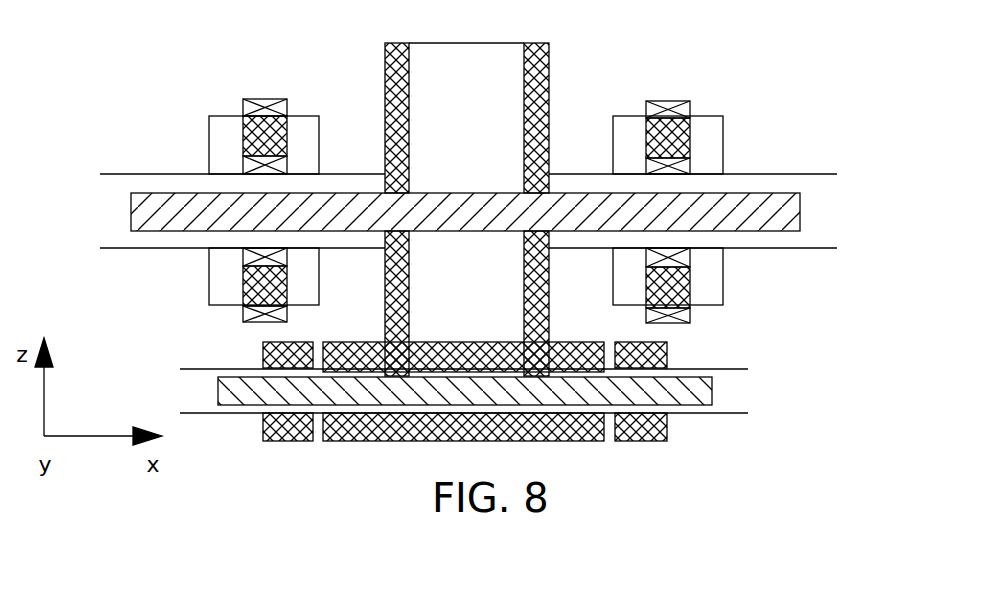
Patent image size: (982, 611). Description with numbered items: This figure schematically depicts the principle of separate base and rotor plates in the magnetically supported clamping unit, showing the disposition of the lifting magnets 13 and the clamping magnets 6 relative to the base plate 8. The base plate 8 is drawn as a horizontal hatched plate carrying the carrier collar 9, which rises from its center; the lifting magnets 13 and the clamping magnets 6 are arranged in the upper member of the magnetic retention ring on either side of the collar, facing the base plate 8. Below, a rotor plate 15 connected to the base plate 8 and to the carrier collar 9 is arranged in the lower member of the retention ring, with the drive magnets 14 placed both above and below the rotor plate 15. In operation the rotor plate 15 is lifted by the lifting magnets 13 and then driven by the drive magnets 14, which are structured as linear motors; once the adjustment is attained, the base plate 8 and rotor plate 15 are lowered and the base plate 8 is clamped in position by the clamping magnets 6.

The clamping magnets 6 is at (685, 292).
The base plate 8 is at (797, 212).
The carrier collar 9 is at (543, 70).
The lifting magnets 13 is at (688, 143).
The drive magnets 14 is at (263, 355).
The rotor plate 15 is at (712, 390).